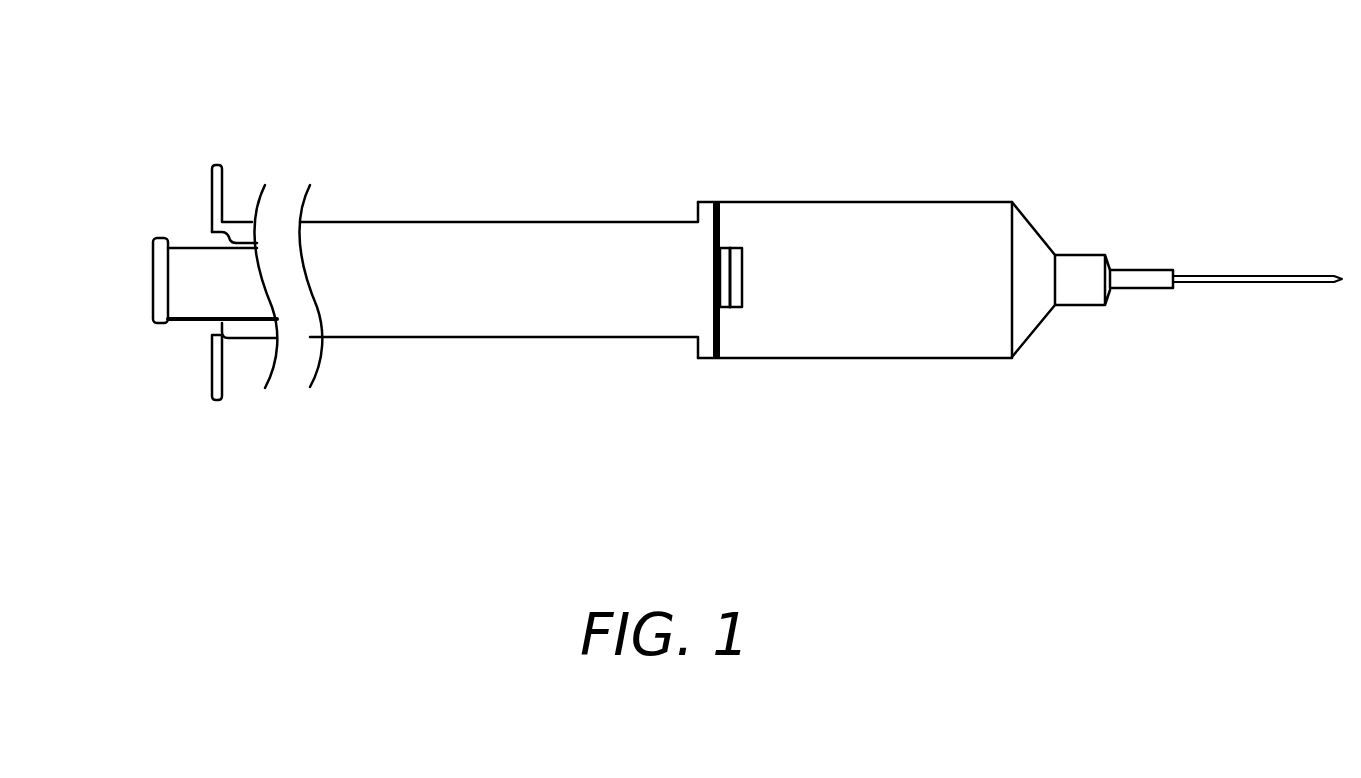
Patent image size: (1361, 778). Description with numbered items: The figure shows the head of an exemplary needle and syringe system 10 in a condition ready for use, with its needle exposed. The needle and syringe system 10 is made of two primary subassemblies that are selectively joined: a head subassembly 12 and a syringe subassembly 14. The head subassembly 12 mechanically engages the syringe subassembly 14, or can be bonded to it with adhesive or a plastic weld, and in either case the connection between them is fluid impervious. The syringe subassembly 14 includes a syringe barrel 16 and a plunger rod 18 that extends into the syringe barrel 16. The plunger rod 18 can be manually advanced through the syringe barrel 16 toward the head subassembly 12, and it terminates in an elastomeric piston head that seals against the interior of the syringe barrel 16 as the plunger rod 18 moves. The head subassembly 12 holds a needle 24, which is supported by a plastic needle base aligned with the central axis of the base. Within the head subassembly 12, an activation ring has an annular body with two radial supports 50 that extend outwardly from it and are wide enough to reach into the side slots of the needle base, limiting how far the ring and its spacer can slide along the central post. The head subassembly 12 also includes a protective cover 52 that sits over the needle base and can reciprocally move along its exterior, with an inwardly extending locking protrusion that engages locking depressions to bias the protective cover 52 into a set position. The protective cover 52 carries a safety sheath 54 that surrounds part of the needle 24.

The needle and syringe system 10 is at (1070, 120).
The head subassembly 12 is at (1008, 374).
The syringe subassembly 14 is at (253, 408).
The syringe barrel 16 is at (478, 242).
The plunger rod 18 is at (202, 298).
The needle 24 is at (1258, 260).
The radial supports 50 is at (727, 248).
The protective cover 52 is at (840, 212).
The safety sheath 54 is at (1138, 280).